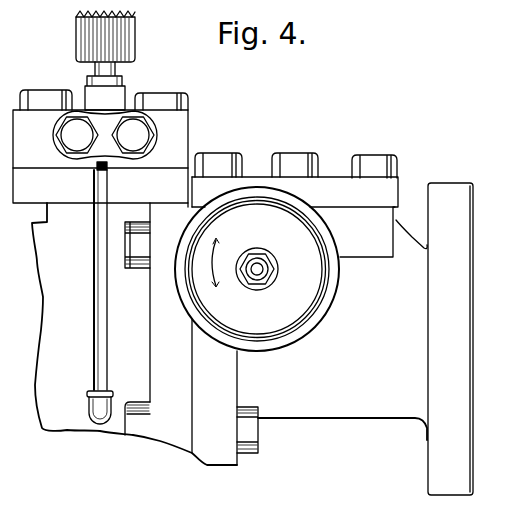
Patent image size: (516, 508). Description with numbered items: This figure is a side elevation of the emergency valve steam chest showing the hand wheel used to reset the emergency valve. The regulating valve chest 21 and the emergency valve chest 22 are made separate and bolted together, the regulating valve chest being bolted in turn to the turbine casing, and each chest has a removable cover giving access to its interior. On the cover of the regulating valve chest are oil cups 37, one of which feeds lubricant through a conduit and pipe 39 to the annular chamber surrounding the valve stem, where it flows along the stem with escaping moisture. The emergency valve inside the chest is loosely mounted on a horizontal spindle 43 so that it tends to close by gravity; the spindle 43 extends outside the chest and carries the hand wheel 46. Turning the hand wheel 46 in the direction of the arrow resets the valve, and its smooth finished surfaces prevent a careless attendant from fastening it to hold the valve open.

The regulating valve chest 21 is at (229, 334).
The emergency valve chest 22 is at (417, 339).
The oil cup 37 is at (135, 50).
The pipe 39 is at (108, 305).
The spindle 43 is at (257, 273).
The hand wheel 46 is at (257, 269).